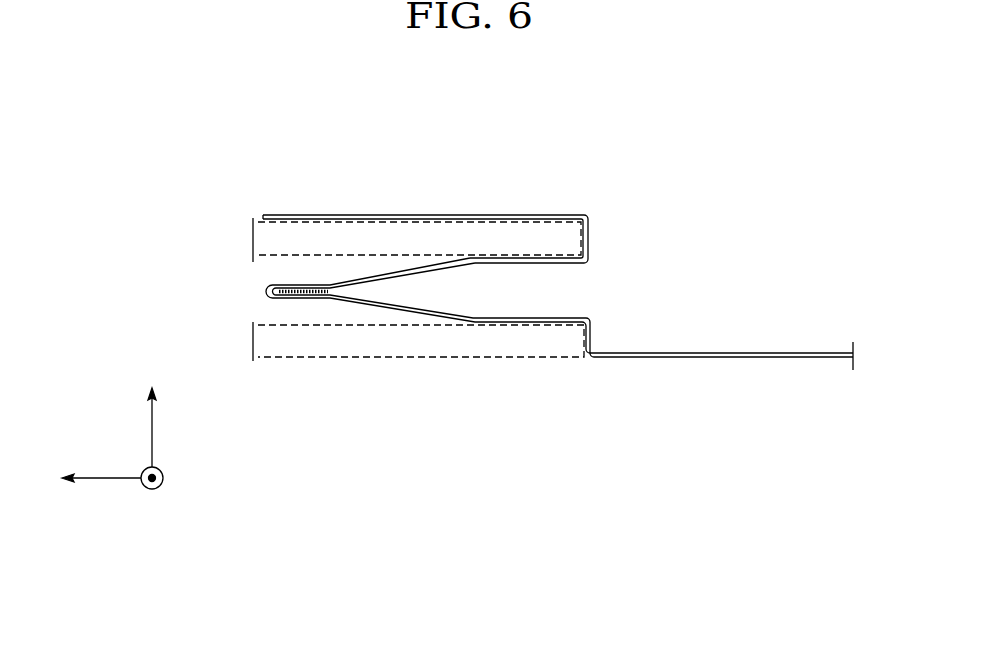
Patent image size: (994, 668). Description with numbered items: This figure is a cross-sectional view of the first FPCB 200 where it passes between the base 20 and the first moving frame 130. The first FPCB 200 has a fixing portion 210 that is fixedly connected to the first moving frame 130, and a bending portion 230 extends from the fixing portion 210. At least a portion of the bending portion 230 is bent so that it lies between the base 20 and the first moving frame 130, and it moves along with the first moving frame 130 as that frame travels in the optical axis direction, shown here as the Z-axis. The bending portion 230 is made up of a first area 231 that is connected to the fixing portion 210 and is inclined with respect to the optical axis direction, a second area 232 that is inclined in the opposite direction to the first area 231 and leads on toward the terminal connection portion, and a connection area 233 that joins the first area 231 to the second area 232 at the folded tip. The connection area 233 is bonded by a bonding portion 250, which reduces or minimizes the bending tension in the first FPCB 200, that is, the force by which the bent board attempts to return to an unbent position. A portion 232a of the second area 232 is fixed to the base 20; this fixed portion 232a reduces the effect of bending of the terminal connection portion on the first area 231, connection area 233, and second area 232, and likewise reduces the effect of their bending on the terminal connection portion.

The first FPCB 200 is at (766, 132).
The first moving frame 130 is at (332, 230).
The base 20 is at (435, 358).
The fixing portion 210 is at (485, 215).
The bending portion 230 is at (593, 291).
The first area 231 is at (410, 283).
The second area 232 is at (392, 300).
The fixed portion 232a is at (590, 337).
The connection area 233 is at (300, 285).
The bonding portion 250 is at (290, 297).